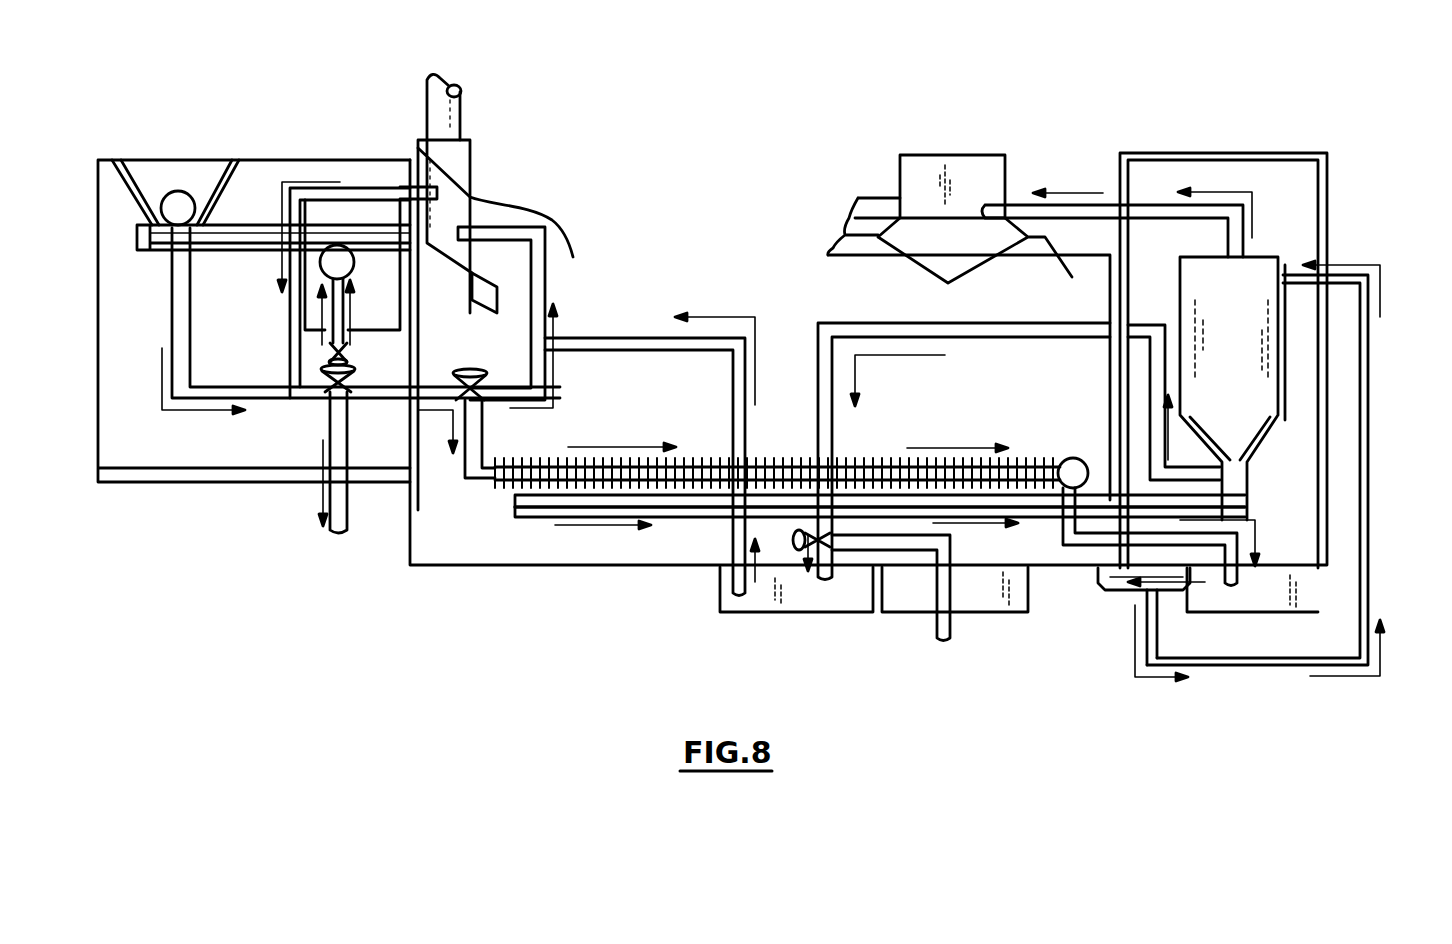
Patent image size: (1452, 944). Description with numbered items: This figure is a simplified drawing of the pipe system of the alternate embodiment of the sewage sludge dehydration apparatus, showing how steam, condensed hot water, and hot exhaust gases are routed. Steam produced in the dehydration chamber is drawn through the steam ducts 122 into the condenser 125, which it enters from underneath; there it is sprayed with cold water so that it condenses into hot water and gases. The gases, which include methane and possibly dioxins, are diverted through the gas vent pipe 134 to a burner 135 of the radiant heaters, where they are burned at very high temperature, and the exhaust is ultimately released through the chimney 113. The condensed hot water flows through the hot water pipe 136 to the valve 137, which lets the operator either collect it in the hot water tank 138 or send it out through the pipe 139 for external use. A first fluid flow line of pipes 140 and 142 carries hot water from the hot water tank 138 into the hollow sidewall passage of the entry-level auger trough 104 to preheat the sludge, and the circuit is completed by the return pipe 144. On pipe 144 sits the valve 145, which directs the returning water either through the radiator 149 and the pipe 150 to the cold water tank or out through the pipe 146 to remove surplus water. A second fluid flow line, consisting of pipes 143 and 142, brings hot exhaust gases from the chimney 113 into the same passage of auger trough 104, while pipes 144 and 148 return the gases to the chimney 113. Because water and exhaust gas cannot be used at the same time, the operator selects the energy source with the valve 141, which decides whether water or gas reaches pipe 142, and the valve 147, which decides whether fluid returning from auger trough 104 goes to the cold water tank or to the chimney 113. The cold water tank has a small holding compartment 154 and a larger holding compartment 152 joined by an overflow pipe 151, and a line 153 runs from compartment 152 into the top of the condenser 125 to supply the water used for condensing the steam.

The auger trough 104 is at (255, 233).
The chimney 113 is at (455, 160).
The steam ducts 122 is at (548, 512).
The condenser 125 is at (1250, 388).
The gas vent pipe 134 is at (1115, 205).
The burner 135 is at (925, 180).
The hot water pipe 136 is at (918, 330).
The valve 137 is at (800, 548).
The hot water tank 138 is at (912, 585).
The pipe 139 is at (940, 638).
The pipe 140 is at (600, 338).
The valve 141 is at (325, 350).
The pipe 142 is at (310, 293).
The pipe 143 is at (348, 190).
The pipe 144 is at (293, 395).
The valve 145 is at (325, 375).
The pipe 146 is at (330, 525).
The valve 147 is at (480, 395).
The pipe 148 is at (520, 232).
The radiator 149 is at (668, 482).
The pipe 150 is at (1145, 600).
The overflow pipe 151 is at (1118, 575).
The larger holding compartment 152 is at (1028, 598).
The line 153 is at (1220, 672).
The small holding compartment 154 is at (1268, 600).